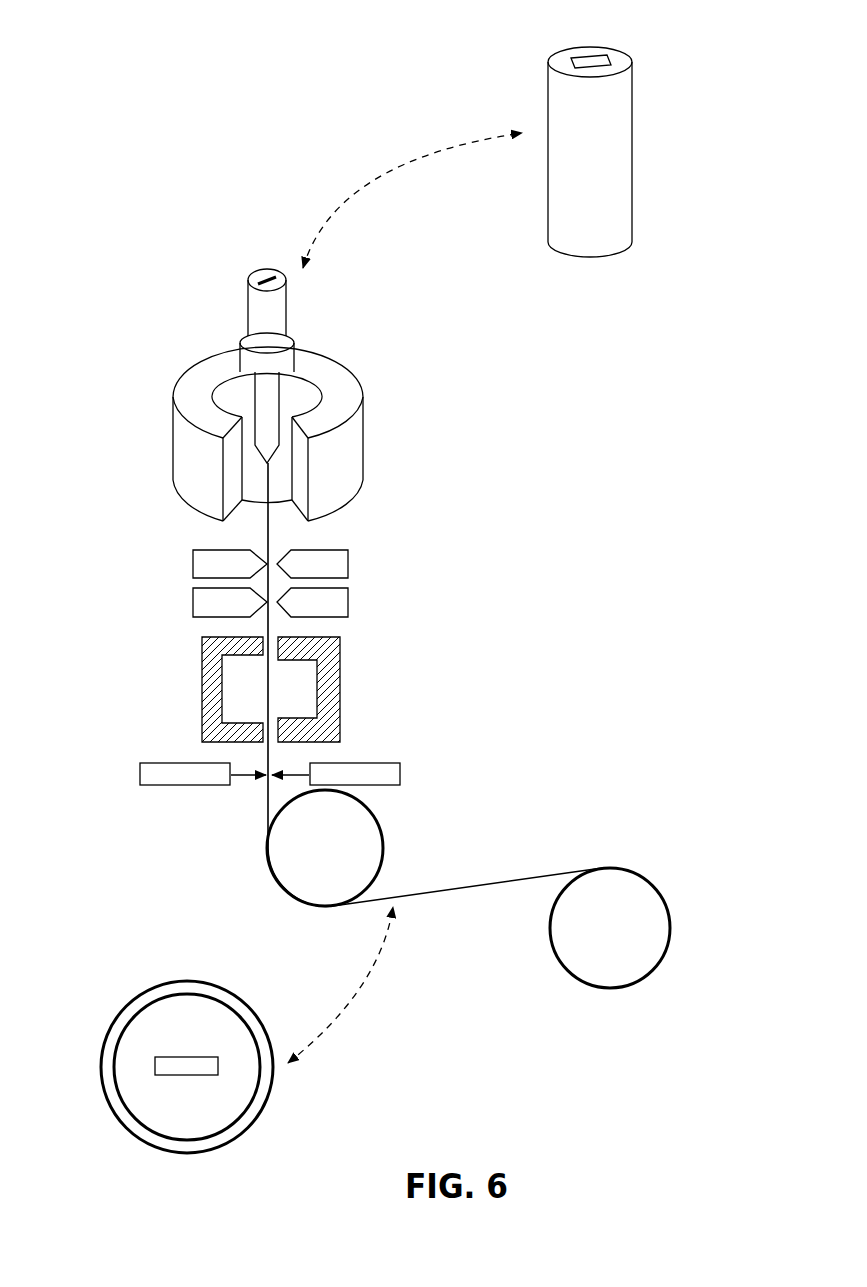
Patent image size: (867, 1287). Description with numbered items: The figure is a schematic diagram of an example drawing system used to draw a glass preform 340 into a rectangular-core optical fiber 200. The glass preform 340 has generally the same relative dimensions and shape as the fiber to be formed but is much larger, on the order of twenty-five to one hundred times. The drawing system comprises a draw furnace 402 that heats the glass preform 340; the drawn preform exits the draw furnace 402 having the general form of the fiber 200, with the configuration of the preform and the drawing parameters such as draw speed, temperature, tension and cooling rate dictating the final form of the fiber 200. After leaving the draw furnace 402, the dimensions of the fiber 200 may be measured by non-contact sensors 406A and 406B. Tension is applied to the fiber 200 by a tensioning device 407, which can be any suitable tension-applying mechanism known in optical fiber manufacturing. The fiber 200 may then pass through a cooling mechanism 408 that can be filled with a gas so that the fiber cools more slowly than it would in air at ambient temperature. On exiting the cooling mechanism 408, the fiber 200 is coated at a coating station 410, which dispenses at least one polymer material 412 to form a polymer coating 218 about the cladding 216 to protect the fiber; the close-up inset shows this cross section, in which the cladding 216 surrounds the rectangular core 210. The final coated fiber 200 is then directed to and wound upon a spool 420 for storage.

The coating station 410 is at (202, 98).
The glass preform 340 is at (633, 116).
The draw furnace 402 is at (363, 430).
The non-contact sensor 406A is at (350, 560).
The non-contact sensor 406B is at (350, 602).
The cooling mechanism 408 is at (343, 683).
The polymer material 412 is at (240, 778).
The tensioning device 407 is at (380, 837).
The spool 420 is at (632, 872).
The rectangular-core optical fiber 200 is at (322, 808).
The cladding 216 is at (197, 1013).
The polymer coating 218 is at (243, 1015).
The core 210 is at (170, 1063).